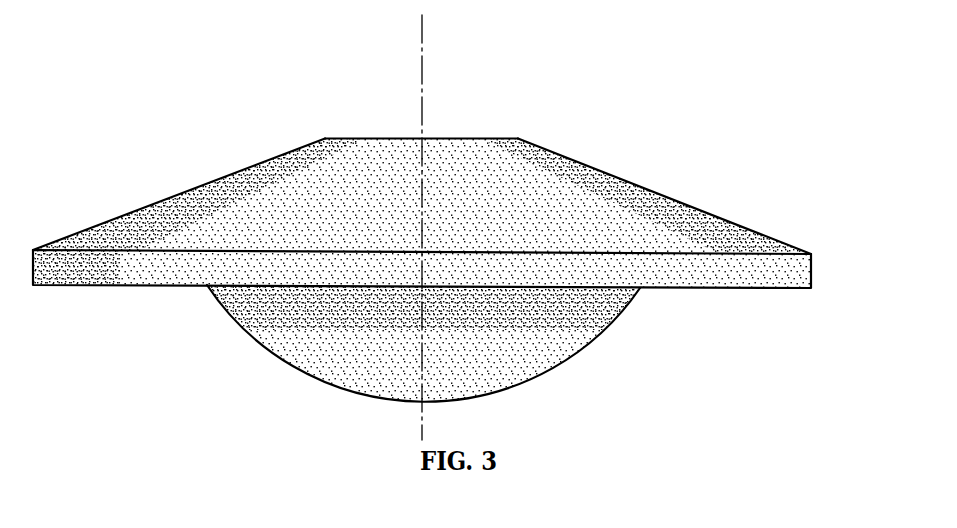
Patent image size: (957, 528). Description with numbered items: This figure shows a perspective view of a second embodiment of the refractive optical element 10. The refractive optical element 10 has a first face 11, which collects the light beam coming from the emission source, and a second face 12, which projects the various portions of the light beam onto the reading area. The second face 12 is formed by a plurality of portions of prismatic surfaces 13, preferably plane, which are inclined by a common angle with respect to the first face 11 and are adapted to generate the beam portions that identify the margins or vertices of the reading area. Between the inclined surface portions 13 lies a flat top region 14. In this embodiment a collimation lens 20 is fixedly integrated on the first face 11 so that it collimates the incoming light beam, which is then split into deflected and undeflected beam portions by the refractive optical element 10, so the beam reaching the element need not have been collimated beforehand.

The refractive optical element 10 is at (422, 222).
The first face 11 is at (698, 310).
The second face 12 is at (422, 159).
The portions of prismatic surfaces 13 is at (153, 205).
The flat top surface 14 is at (478, 138).
The collimation lens 20 is at (538, 360).